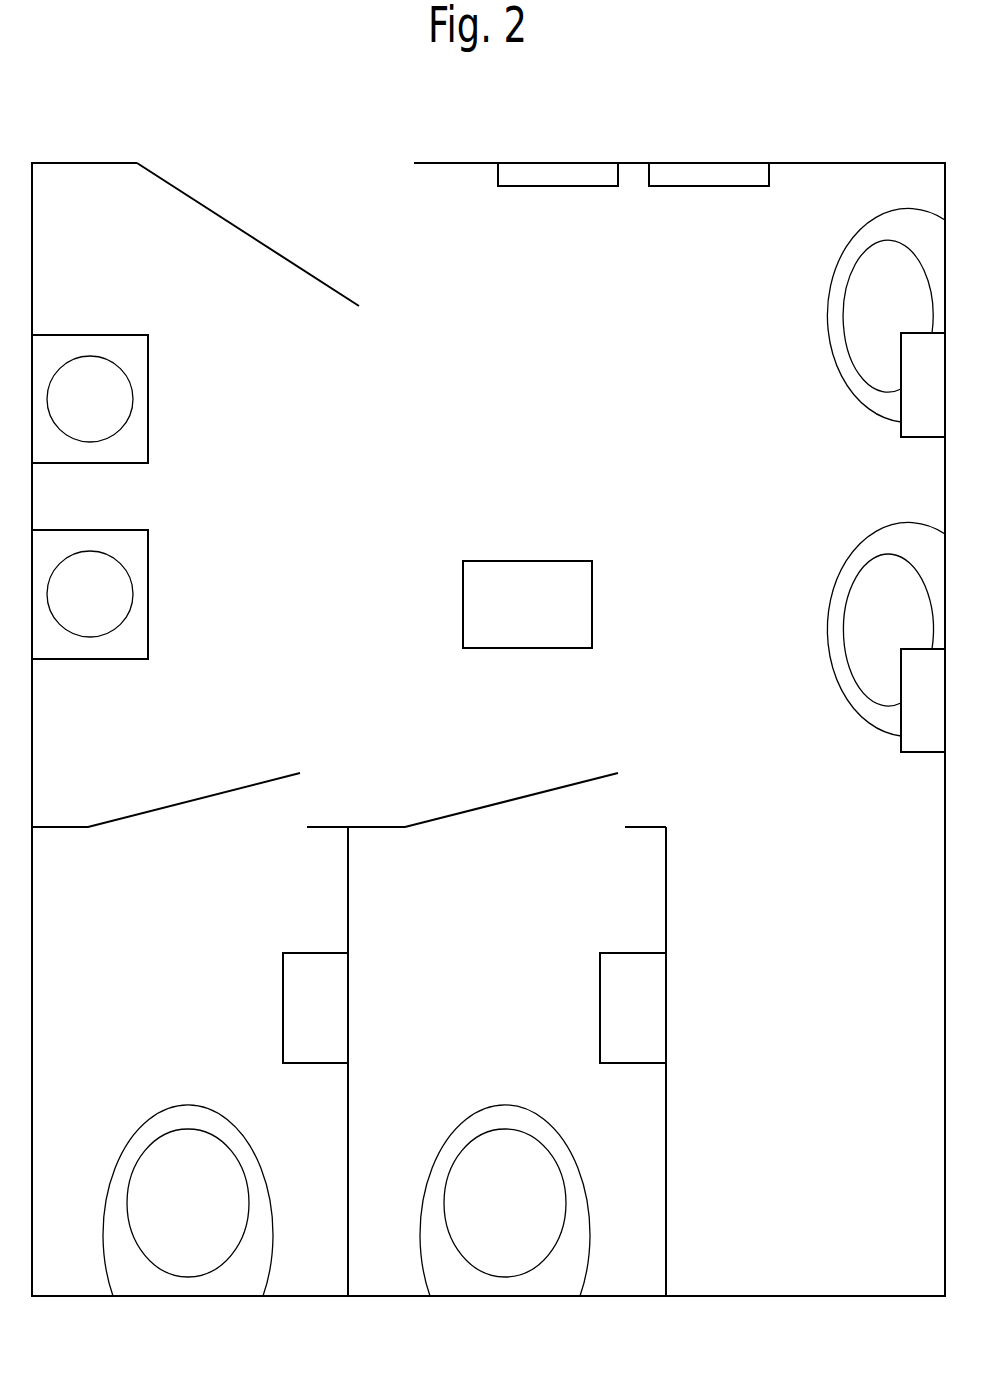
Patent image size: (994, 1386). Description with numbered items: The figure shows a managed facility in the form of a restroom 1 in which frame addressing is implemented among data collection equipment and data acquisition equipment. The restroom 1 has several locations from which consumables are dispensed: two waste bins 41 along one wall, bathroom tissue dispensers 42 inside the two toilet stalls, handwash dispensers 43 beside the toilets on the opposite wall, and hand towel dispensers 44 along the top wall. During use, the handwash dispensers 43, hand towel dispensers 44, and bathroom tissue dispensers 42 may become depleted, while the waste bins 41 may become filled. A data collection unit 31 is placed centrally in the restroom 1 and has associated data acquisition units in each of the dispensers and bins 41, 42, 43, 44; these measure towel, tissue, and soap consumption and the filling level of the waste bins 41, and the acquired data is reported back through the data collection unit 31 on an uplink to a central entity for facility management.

The restroom 1 is at (322, 450).
The data collection unit 31 is at (550, 561).
The waste bins 41 is at (148, 434).
The bathroom tissue dispensers 42 is at (283, 970).
The handwash dispensers 43 is at (915, 437).
The hand towel dispensers 44 is at (603, 186).